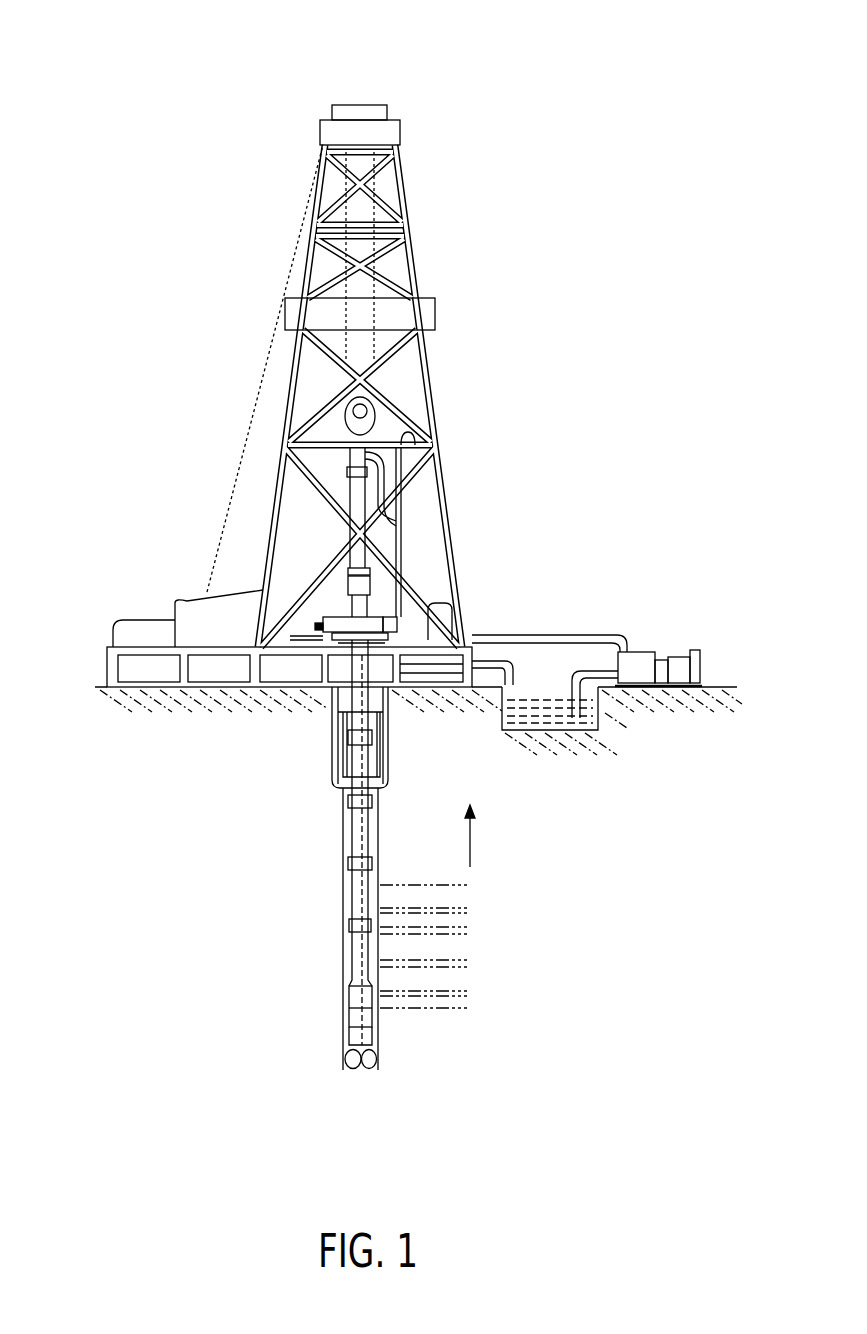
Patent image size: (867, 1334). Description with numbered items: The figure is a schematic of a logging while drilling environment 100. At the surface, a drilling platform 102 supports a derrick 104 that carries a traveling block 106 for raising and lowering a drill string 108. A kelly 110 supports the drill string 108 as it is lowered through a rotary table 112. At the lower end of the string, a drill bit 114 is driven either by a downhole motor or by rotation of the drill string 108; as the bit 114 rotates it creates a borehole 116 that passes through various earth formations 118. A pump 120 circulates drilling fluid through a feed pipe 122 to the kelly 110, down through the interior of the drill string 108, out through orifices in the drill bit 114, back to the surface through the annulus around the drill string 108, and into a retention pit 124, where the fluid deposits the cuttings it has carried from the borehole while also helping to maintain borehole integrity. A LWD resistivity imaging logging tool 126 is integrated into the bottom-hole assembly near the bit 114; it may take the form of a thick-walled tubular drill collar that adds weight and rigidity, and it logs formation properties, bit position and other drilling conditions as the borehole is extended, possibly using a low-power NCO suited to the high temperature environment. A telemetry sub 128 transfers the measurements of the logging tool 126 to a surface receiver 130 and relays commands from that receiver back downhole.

The logging while drilling environment 100 is at (733, 71).
The drilling platform 102 is at (107, 656).
The derrick 104 is at (417, 264).
The traveling block 106 is at (377, 409).
The drill string 108 is at (368, 840).
The kelly 110 is at (357, 493).
The rotary table 112 is at (384, 616).
The drill bit 114 is at (379, 1052).
The borehole 116 is at (378, 848).
The earth formations 118 is at (467, 884).
The pump 120 is at (632, 657).
The feed pipe 122 is at (553, 635).
The retention pit 124 is at (518, 713).
The logging tool 126 is at (348, 1024).
The telemetry sub 128 is at (342, 999).
The surface receiver 130 is at (368, 571).